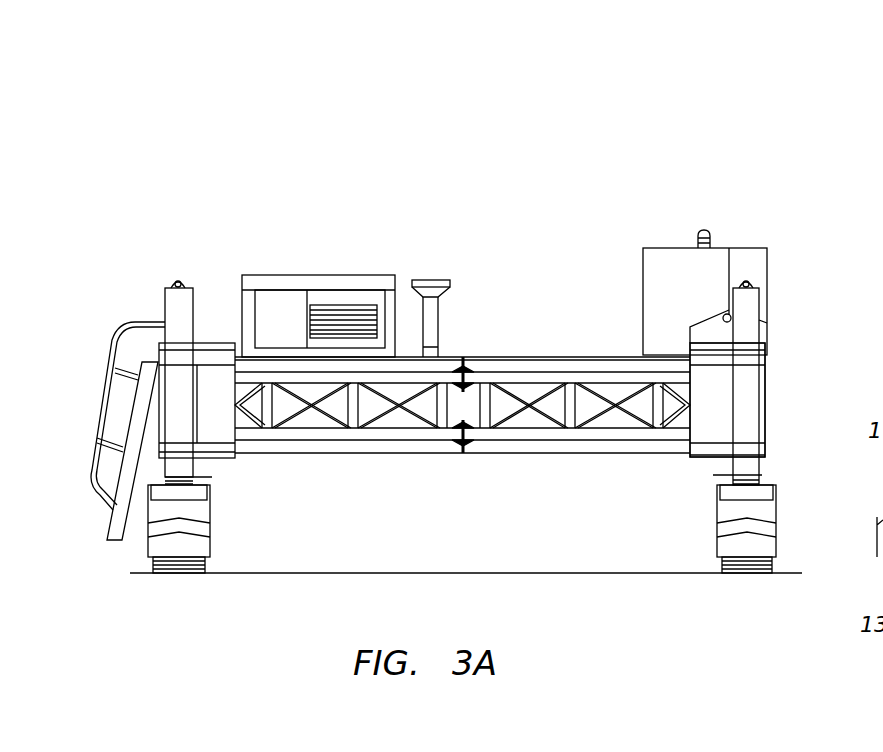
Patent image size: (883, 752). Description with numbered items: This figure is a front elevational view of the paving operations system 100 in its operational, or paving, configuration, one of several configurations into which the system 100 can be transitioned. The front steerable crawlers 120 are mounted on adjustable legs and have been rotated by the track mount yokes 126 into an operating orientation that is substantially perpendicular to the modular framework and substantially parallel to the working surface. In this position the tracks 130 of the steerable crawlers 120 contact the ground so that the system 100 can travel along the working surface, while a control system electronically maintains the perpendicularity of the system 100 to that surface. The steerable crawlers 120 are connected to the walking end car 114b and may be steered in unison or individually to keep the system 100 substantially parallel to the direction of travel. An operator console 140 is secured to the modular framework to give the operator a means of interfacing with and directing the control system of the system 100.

The paving operations system 100 is at (270, 122).
The walking end car 114b is at (717, 405).
The steerable crawler 120 is at (725, 513).
The track mount yoke 126 is at (717, 490).
The track 130 is at (747, 575).
The operator console 140 is at (433, 280).